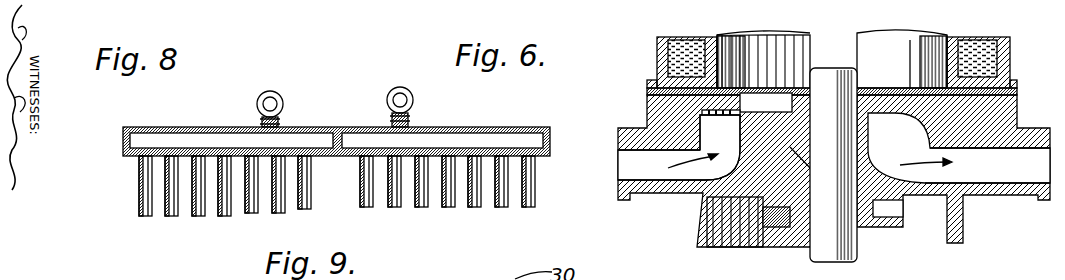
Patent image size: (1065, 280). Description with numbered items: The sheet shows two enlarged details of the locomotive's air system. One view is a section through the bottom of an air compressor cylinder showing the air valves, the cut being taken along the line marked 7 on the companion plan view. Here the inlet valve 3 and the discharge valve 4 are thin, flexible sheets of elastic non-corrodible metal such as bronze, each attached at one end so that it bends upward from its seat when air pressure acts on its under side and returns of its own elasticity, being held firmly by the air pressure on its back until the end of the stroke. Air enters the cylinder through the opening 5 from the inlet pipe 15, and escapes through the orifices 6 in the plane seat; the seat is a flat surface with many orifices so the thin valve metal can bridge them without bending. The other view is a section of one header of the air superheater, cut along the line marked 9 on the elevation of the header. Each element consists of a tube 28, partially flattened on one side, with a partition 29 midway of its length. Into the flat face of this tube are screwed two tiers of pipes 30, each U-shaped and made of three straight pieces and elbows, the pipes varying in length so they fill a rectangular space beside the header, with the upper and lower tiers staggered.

In FIG. 6, the inlet valve 3 is at (720, 147).
In FIG. 6, the discharge valve 4 is at (959, 148).
In FIG. 6, the opening 5 is at (766, 101).
In FIG. 6, the orifices 6 is at (916, 89).
In FIG. 6, the section line 7- 7 is at (602, 30).
In FIG. 8, the section line 9- 9 is at (125, 183).
In FIG. 6, the inlet pipe 15 is at (679, 147).
In FIG. 8, the tube 28 is at (187, 135).
In FIG. 8, the partition 29 is at (353, 128).
In FIG. 8, the pipes 30 is at (198, 217).